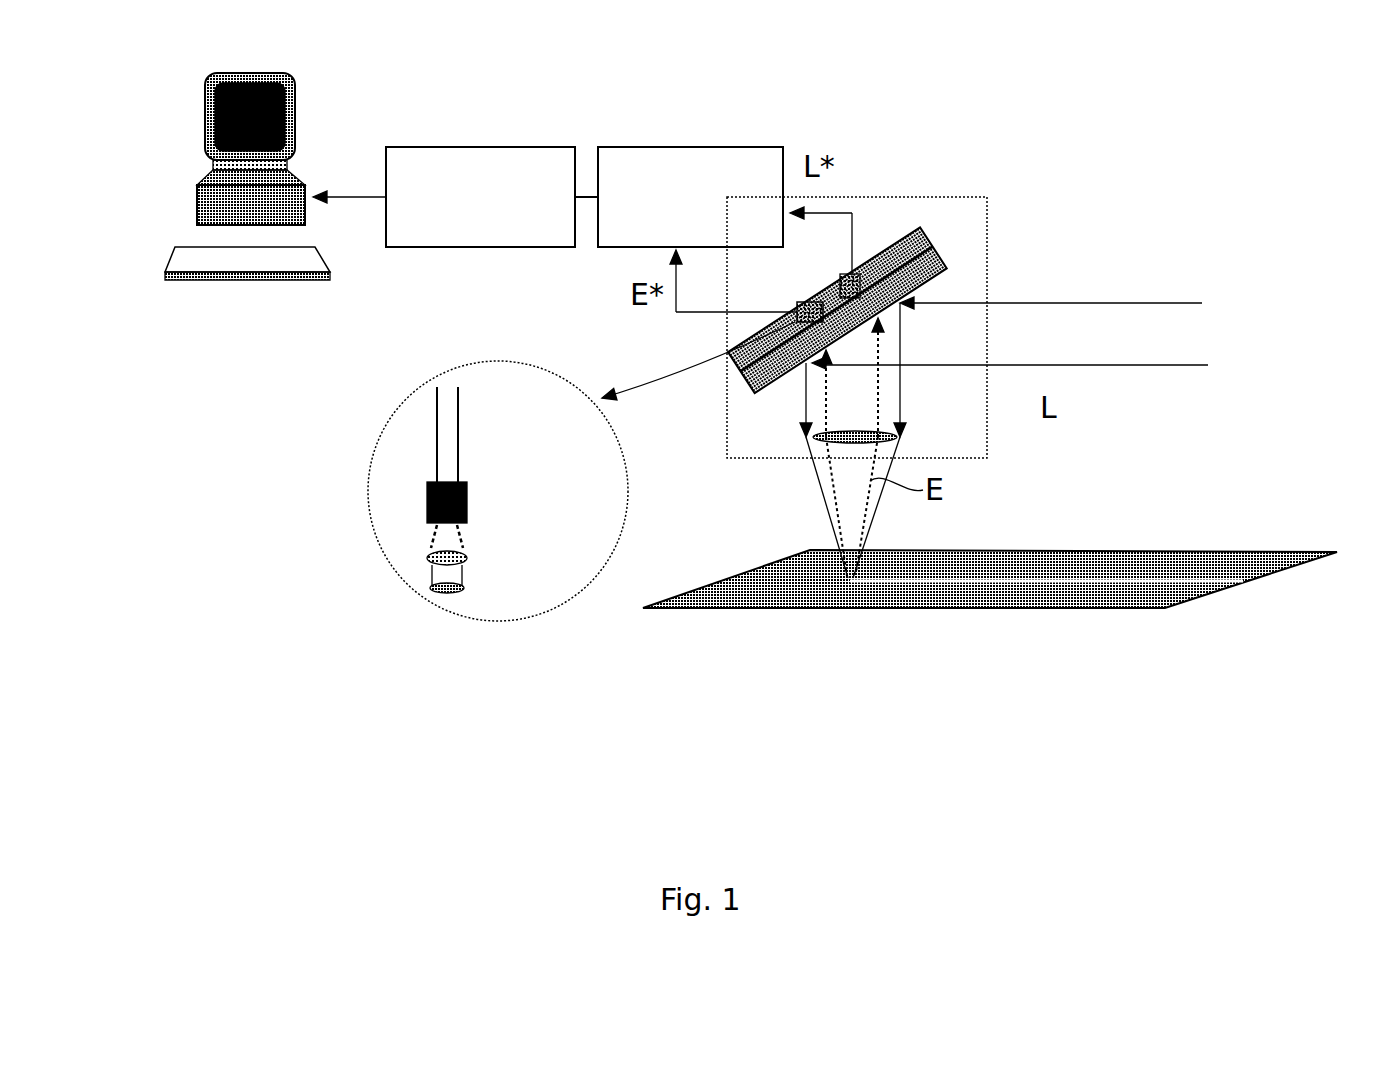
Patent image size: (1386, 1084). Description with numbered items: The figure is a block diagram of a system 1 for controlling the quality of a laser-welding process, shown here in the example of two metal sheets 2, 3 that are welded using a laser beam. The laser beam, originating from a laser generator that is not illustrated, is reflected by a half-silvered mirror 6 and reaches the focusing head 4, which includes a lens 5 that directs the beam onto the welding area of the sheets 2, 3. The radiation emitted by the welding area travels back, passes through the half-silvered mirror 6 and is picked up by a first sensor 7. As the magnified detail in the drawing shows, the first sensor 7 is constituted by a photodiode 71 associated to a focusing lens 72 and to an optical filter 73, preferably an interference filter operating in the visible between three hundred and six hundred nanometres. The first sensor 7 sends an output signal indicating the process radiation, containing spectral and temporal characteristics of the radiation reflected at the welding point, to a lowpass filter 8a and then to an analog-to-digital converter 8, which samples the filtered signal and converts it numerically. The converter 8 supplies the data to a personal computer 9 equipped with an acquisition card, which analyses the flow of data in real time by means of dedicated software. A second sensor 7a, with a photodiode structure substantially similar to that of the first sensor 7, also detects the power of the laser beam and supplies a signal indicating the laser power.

The system for controlling the quality of a laser-welding process 1 is at (500, 720).
The metal sheet 2 is at (1125, 608).
The metal sheet 3 is at (1288, 572).
The focusing head 4 is at (987, 227).
The lens 5 is at (987, 433).
The half-silvered mirror 6 is at (987, 285).
The first sensor 7 is at (804, 302).
The second sensor 7a is at (853, 272).
The analog-to-digital converter 8 is at (512, 147).
The lowpass filter 8a is at (738, 147).
The personal computer 9 is at (305, 280).
The photodiode 71 is at (467, 495).
The focusing lens 72 is at (462, 556).
The optical filter 73 is at (465, 591).